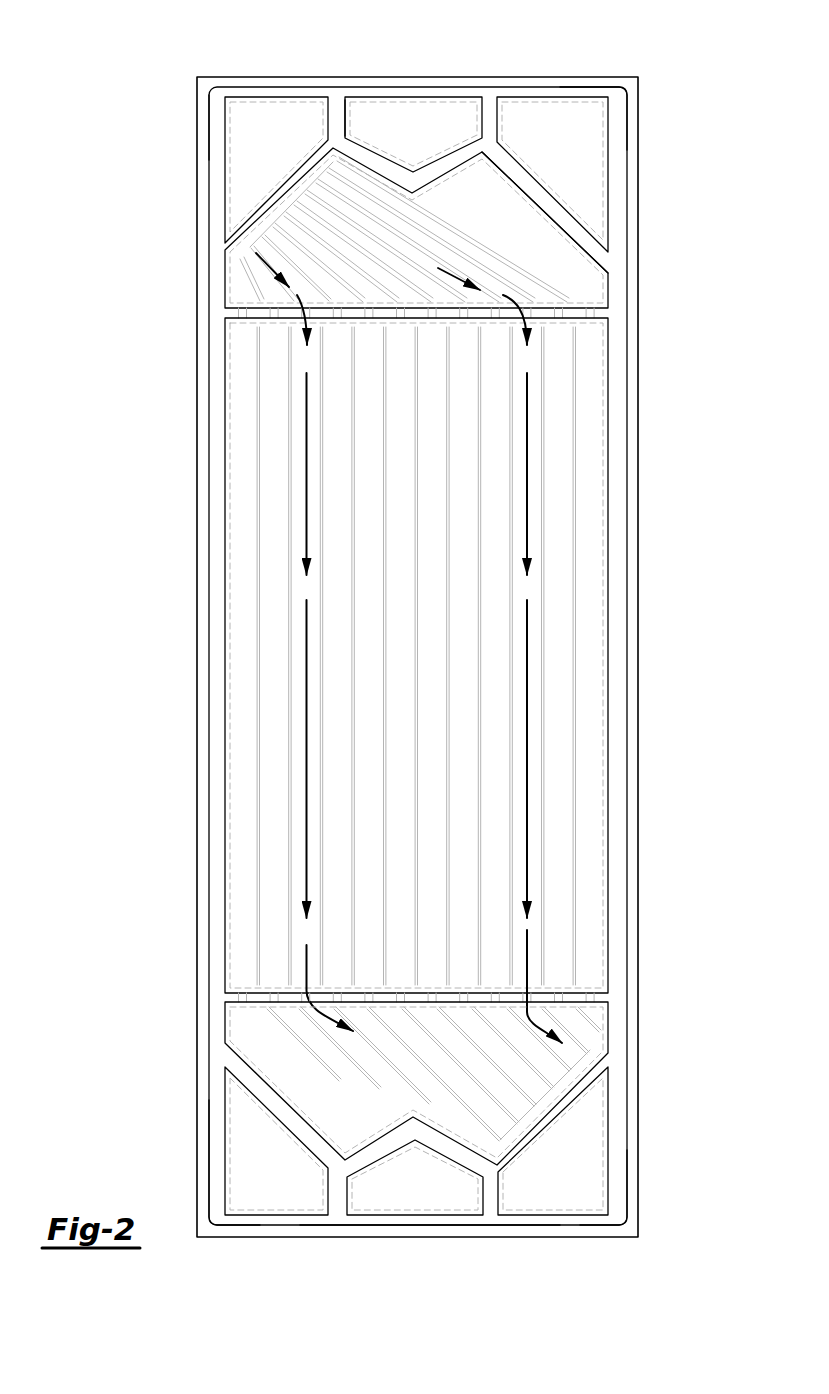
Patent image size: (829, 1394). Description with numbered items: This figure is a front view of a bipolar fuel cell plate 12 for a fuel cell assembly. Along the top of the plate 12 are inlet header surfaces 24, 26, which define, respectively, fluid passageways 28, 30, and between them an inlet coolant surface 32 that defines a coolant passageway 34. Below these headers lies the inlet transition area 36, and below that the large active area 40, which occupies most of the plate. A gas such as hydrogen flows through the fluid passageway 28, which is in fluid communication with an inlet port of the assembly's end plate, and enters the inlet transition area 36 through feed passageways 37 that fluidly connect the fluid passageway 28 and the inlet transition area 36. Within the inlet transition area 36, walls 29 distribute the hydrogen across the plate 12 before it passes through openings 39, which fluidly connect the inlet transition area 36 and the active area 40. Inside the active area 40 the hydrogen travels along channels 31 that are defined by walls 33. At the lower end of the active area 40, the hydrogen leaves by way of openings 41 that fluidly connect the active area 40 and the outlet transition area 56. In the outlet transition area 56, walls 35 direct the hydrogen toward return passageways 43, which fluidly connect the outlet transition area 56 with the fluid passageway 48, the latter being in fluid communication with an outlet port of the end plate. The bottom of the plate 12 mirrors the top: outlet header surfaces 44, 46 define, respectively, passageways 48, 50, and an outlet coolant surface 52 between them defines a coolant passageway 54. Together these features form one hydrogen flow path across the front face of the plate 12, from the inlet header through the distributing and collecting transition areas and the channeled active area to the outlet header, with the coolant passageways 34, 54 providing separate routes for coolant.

The bipolar fuel cell plate 12 is at (670, 48).
The inlet header surface 24 is at (230, 112).
The inlet header surface 26 is at (583, 100).
The fluid passageway 28 is at (270, 100).
The fluid passageway 30 is at (532, 100).
The inlet coolant surface 32 is at (377, 103).
The coolant passageway 34 is at (443, 100).
The inlet transition area 36 is at (583, 248).
The feed passageways 37 is at (314, 165).
The walls 29 is at (260, 241).
The openings 39 is at (240, 320).
The channels 31 is at (252, 610).
The walls 33 is at (254, 687).
The openings 41 is at (235, 296).
The active area 40 is at (228, 565).
The walls 35 is at (288, 1026).
The return passageways 43 is at (555, 1112).
The outlet transition area 56 is at (233, 1022).
The outlet header surface 46 is at (232, 1175).
The outlet header surface 44 is at (592, 1197).
The fluid passageway 48 is at (548, 1212).
The passageway 50 is at (272, 1215).
The outlet coolant surface 52 is at (450, 1197).
The coolant passageway 54 is at (395, 1212).